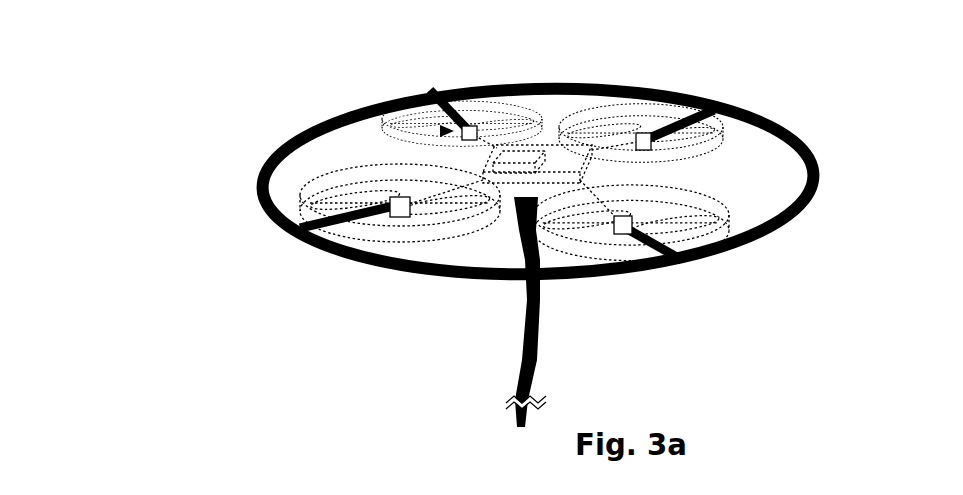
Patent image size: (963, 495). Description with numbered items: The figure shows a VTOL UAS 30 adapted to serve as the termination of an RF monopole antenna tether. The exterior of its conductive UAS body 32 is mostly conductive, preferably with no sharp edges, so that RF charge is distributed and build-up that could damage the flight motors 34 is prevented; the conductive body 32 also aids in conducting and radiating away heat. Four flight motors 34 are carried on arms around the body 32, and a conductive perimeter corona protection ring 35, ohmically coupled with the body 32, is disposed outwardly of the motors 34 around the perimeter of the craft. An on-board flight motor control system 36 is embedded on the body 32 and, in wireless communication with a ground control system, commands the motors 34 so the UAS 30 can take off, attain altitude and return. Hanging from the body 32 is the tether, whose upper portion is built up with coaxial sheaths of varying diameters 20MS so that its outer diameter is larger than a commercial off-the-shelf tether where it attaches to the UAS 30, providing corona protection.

The VTOL UAS 30 is at (485, 220).
The conductive UAS body 32 is at (553, 162).
The flight motors 34 is at (398, 196).
The conductive perimeter corona protection ring 35 is at (252, 179).
The on-board flight motor control system 36 is at (543, 158).
The coaxial sheaths of varying diameters 20MS is at (509, 246).